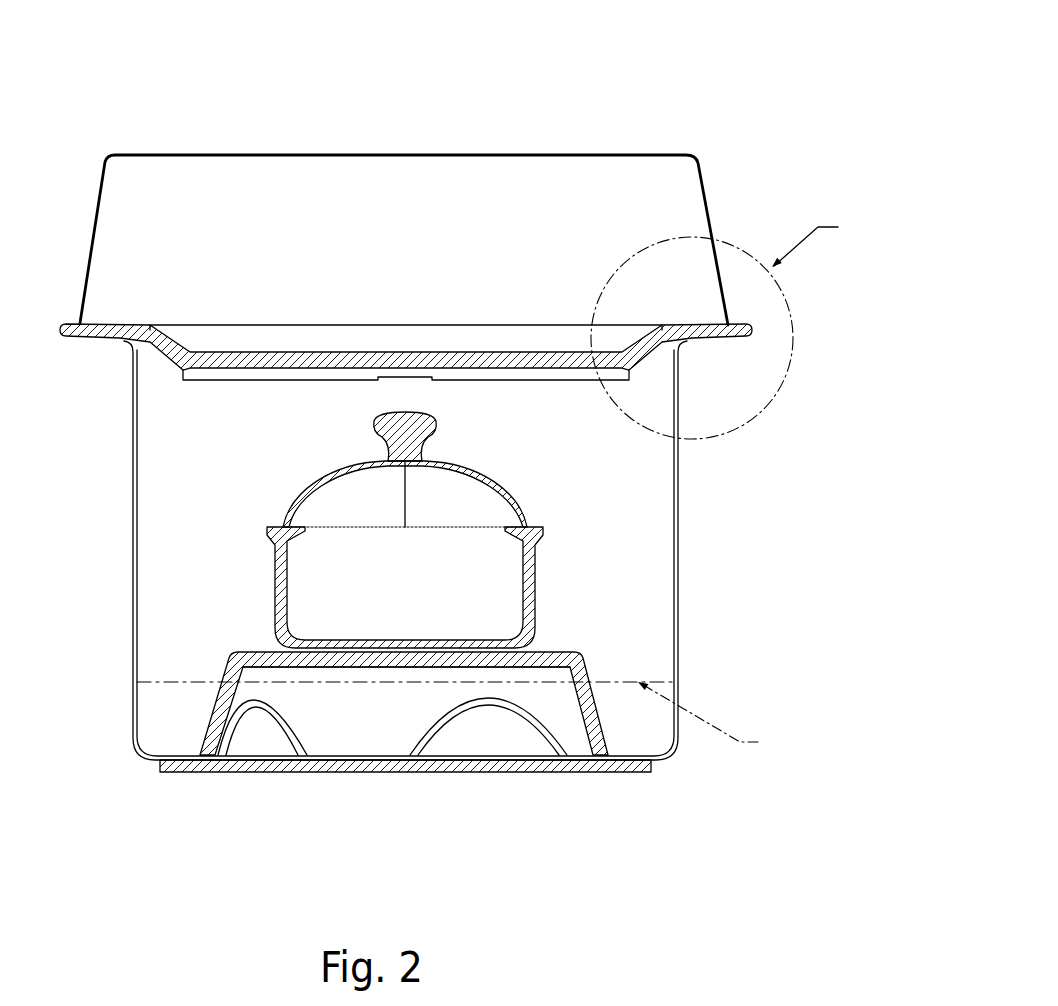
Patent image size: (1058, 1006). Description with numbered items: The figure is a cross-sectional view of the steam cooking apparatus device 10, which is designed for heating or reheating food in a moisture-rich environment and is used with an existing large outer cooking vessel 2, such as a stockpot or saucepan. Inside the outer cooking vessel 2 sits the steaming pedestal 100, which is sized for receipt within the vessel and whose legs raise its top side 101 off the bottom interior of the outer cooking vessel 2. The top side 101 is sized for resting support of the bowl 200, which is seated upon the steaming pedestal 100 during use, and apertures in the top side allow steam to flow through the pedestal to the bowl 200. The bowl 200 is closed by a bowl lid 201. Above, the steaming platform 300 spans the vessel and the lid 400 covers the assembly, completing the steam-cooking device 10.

The steam cooking apparatus device 10 is at (157, 108).
The outer cooking vessel 2 is at (674, 544).
The steaming pedestal 100 is at (230, 667).
The top side 101 is at (533, 650).
The bowl 200 is at (533, 559).
The bowl lid 201 is at (496, 470).
The steaming platform 300 is at (80, 334).
The lid 400 is at (415, 158).